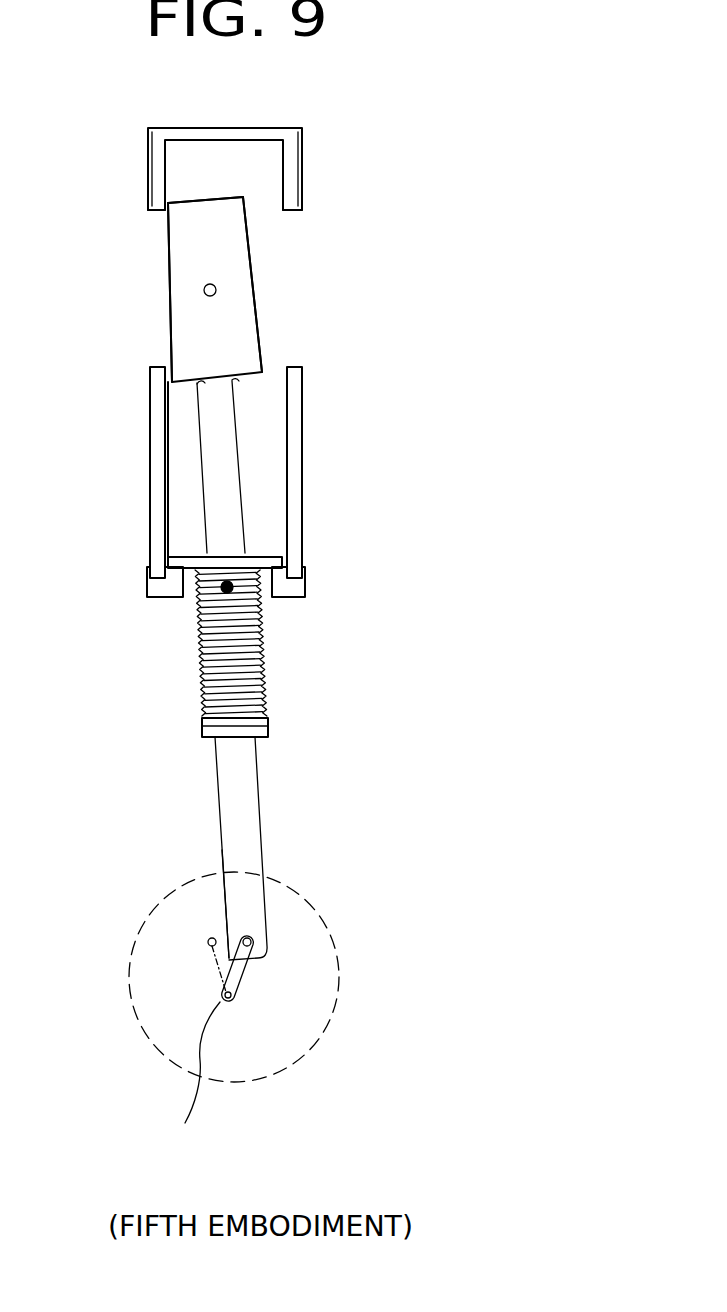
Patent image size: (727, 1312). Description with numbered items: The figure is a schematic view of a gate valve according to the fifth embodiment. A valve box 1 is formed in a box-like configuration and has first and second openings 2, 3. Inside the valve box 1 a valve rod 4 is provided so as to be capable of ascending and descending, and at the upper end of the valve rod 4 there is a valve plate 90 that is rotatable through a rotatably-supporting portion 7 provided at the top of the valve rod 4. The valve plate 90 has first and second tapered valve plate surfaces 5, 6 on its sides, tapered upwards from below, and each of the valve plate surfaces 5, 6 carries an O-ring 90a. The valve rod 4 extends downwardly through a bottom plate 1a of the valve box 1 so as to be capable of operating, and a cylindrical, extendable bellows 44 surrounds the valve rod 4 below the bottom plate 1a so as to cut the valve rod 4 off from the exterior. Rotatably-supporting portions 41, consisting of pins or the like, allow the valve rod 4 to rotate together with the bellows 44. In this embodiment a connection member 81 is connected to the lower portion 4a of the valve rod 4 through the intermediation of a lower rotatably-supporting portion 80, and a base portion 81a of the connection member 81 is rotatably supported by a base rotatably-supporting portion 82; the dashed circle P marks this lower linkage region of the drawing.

The valve box 1 is at (300, 158).
The bottom plate 1a is at (263, 553).
The first opening 2 is at (158, 210).
The second opening 3 is at (295, 212).
The valve rod 4 is at (245, 782).
The lower portion of the valve rod 4a is at (238, 900).
The first tapered valve plate surface 5 is at (168, 270).
The second tapered valve plate surface 6 is at (250, 237).
The rotatably-supporting portion 7 is at (216, 292).
The rotatably-supporting portion 41 is at (232, 592).
The bellows 44 is at (201, 670).
The lower rotatably-supporting portion 80 is at (249, 938).
The connection member 81 is at (240, 988).
The base portion 81a is at (240, 1002).
The base rotatably-supporting portion 82 is at (191, 1081).
The valve plate 90 is at (244, 345).
The O-ring 90a is at (246, 197).
The pivot region P is at (340, 971).